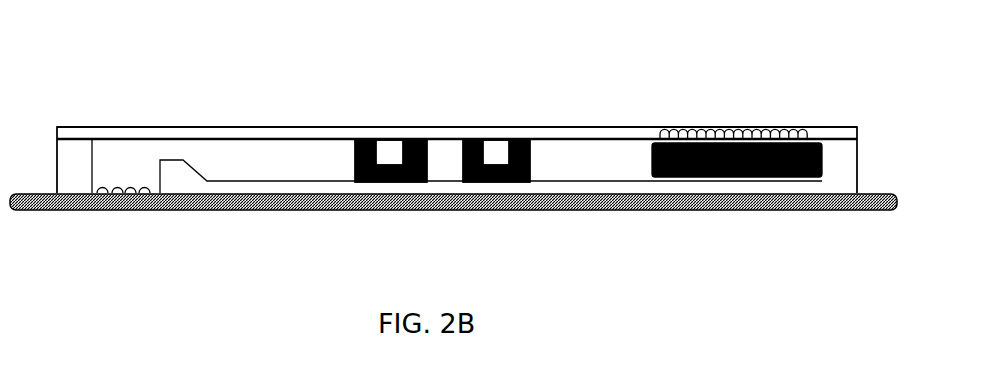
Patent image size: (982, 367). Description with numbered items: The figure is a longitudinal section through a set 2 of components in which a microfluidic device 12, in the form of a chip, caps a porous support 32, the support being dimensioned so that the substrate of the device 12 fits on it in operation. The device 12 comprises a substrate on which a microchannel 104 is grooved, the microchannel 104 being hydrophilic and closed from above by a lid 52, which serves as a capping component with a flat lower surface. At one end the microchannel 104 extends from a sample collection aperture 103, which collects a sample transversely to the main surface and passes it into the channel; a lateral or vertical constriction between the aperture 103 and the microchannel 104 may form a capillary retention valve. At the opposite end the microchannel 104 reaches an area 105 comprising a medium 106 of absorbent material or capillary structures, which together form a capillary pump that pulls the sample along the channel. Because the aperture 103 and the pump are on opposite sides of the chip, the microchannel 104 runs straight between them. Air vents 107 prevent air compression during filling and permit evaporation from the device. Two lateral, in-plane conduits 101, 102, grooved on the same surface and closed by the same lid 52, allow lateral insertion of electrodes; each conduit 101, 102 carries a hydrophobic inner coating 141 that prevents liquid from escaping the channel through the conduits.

The set of components 2 is at (747, 60).
The microfluidic device 12 is at (848, 162).
The porous support 32 is at (660, 212).
The lid 52 is at (213, 127).
The conduit 101 is at (382, 163).
The conduit 102 is at (497, 163).
The sample collection aperture 103 is at (118, 172).
The microchannel 104 is at (300, 153).
The area 105 is at (822, 178).
The medium 106 is at (683, 140).
The air vents 107 is at (737, 127).
The hydrophobic inner coating 141 is at (467, 140).